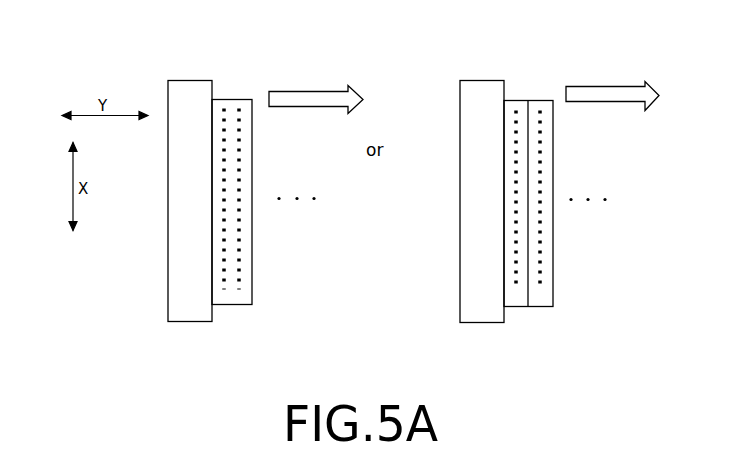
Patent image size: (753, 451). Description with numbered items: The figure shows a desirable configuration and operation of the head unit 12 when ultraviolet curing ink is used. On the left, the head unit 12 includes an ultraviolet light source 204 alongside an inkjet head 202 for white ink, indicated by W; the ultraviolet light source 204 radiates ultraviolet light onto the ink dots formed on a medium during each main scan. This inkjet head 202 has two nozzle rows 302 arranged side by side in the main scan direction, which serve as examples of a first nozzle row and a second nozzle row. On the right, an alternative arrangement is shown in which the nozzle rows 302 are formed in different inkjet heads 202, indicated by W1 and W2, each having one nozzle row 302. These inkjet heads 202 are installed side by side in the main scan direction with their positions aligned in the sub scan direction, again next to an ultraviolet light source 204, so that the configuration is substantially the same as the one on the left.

The head unit 12 is at (232, 62).
The inkjet head 202 is at (252, 275).
The ultraviolet light source 204 is at (187, 323).
The nozzle row 302 is at (238, 108).
The white ink W is at (239, 315).
The inkjet head for white ink W1 is at (521, 316).
The inkjet head for white ink W2 is at (551, 316).